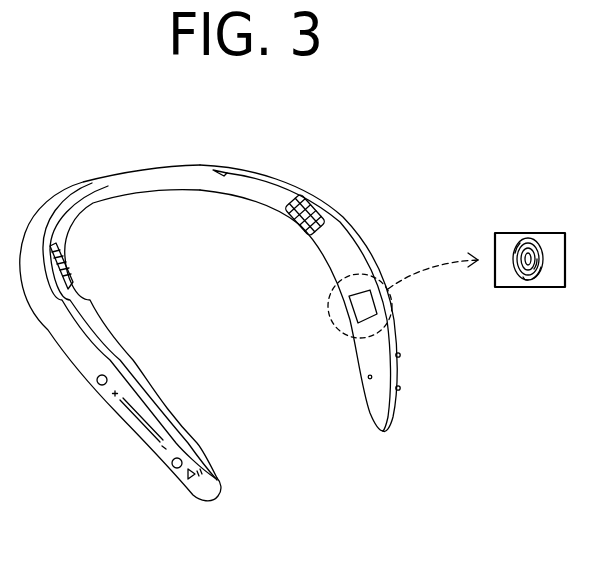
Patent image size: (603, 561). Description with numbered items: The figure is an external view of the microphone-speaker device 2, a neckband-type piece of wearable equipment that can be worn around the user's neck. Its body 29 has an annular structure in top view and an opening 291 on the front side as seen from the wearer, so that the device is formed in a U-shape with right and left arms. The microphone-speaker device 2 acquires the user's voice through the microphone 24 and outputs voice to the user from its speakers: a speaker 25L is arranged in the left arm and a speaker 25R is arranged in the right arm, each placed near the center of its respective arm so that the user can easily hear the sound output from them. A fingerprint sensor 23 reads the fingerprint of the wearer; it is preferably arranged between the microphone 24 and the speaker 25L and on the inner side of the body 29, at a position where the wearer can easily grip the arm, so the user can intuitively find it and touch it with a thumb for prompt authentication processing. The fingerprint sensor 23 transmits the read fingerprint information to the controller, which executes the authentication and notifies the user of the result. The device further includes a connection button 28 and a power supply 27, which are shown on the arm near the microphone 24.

The microphone-speaker device 2 is at (290, 136).
The body 29 is at (127, 172).
The opening 291 is at (310, 478).
The speaker 25R is at (70, 266).
The speaker 25L is at (300, 221).
The fingerprint sensor 23 is at (352, 310).
The microphone 24 is at (369, 377).
The connection button 28 is at (401, 356).
The power supply 27 is at (401, 389).